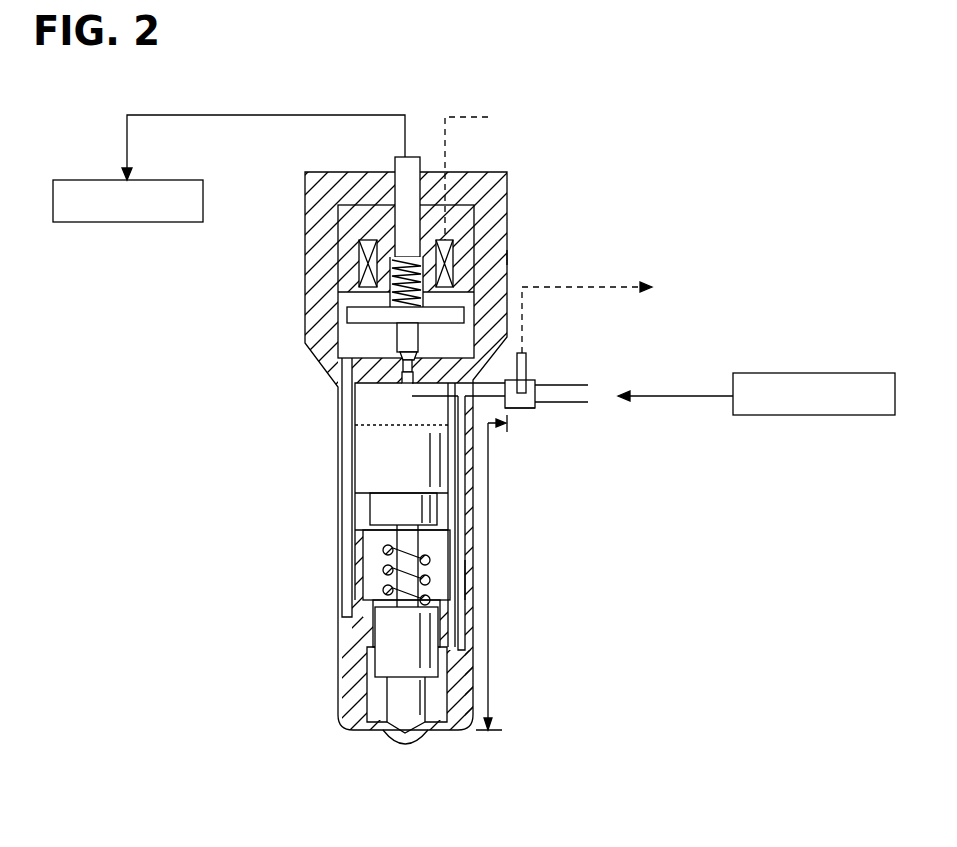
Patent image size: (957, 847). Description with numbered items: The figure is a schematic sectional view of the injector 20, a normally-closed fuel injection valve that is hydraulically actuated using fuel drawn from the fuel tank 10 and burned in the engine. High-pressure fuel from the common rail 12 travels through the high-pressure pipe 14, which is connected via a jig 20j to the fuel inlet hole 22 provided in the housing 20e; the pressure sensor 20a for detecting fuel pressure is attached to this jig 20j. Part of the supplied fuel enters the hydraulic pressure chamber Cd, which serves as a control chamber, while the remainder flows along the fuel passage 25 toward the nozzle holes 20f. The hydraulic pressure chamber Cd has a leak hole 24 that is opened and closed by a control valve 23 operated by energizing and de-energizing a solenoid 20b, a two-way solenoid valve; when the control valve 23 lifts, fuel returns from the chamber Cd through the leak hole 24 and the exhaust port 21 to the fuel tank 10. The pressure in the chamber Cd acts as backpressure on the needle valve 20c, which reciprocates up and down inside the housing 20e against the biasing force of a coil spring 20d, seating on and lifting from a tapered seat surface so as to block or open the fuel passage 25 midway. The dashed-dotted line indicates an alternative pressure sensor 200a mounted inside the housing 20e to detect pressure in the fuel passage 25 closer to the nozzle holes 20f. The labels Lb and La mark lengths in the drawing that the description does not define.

The fuel tank 10 is at (93, 180).
The common rail 12 is at (779, 373).
The high-pressure pipe 14 is at (580, 404).
The injector 20 is at (447, 424).
The pressure sensor 20a is at (527, 366).
The solenoid 20b is at (358, 262).
The needle valve 20c is at (380, 642).
The coil spring 20d is at (385, 557).
The housing 20e is at (508, 257).
The nozzle holes 20f is at (427, 735).
The jig 20j is at (533, 408).
The exhaust port 21 is at (412, 158).
The fuel inlet hole 22 is at (484, 400).
The control valve 23 is at (398, 336).
The leak hole 24 is at (402, 358).
The fuel passage 25 is at (462, 634).
The pressure sensor 200a is at (478, 562).
The hydraulic pressure chamber Cd is at (373, 417).
The piston / back-pressure length Lb is at (425, 400).
The axial length La is at (489, 690).